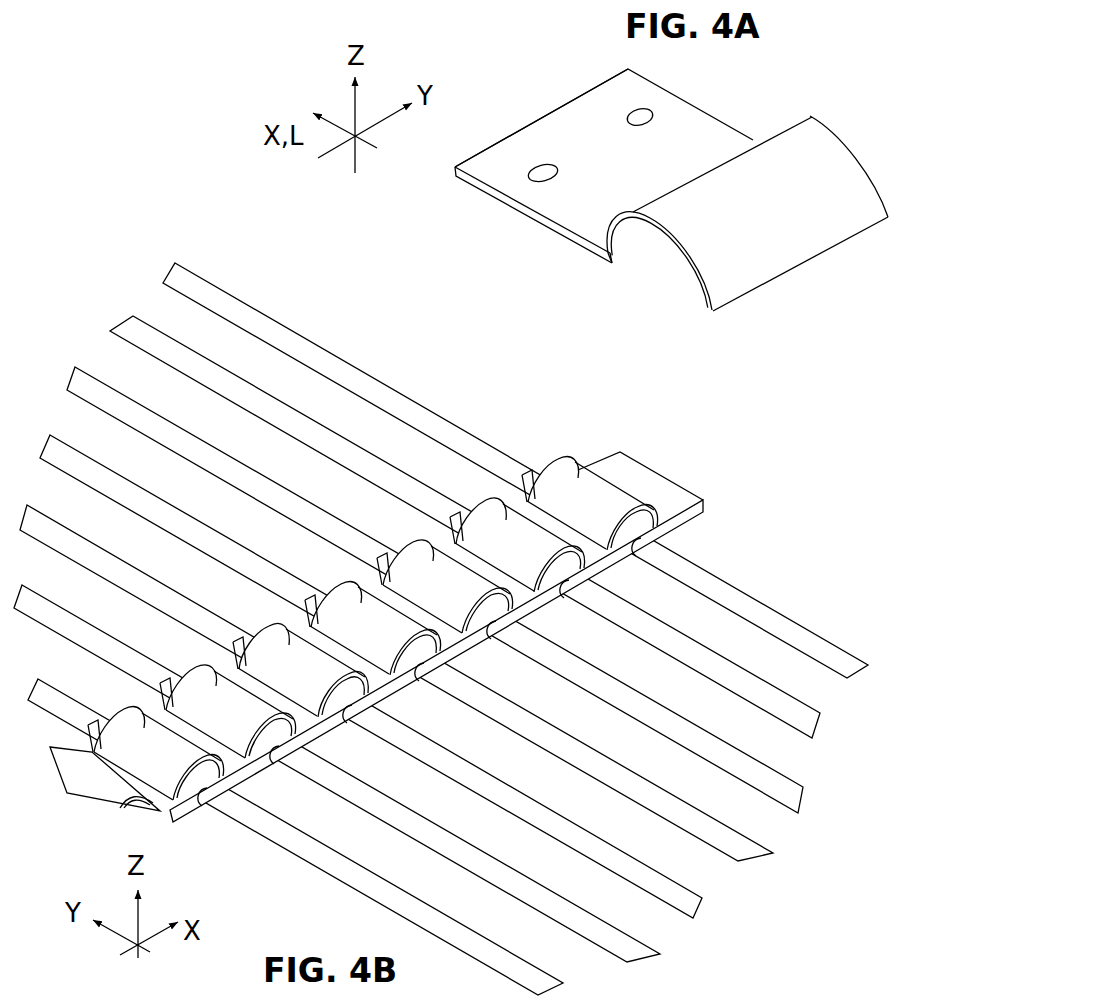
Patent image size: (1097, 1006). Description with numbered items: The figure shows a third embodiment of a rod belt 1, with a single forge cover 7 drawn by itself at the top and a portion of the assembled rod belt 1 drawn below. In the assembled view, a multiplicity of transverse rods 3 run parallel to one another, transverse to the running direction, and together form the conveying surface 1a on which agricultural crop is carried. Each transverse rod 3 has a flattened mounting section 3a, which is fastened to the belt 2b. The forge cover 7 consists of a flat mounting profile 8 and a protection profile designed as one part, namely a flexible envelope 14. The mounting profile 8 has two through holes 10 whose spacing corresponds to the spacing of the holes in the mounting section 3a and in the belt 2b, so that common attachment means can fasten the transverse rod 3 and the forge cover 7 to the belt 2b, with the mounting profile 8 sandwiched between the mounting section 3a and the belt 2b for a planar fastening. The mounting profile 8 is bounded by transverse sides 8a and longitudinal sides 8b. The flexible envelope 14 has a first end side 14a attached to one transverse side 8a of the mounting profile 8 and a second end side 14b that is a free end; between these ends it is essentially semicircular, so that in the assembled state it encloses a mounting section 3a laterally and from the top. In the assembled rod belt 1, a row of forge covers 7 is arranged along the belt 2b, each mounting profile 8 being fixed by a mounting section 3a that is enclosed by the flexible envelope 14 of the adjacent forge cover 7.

In FIG. 4B, the rod belt 1 is at (233, 263).
In FIG. 4B, the conveying surface 1a is at (118, 372).
In FIG. 4B, the belt 2b is at (690, 498).
In FIG. 4B, the transverse rod 3 is at (340, 447).
In FIG. 4B, the mounting section 3a is at (568, 574).
In FIG. 4A, the forge cover 7 is at (455, 173).
In FIG. 4B, the forge cover 7 is at (523, 505).
In FIG. 4A, the mounting profile 8 is at (570, 203).
In FIG. 4A, the transverse side 8a is at (507, 137).
In FIG. 4A, the longitudinal side 8b is at (730, 126).
In FIG. 4A, the through hole 10 is at (543, 165).
In FIG. 4A, the flexible envelope 14 is at (807, 137).
In FIG. 4B, the flexible envelope 14 is at (553, 470).
In FIG. 4A, the first end side 14a is at (613, 256).
In FIG. 4A, the second end side 14b is at (712, 311).
In FIG. 4B, the second end side 14b is at (658, 516).